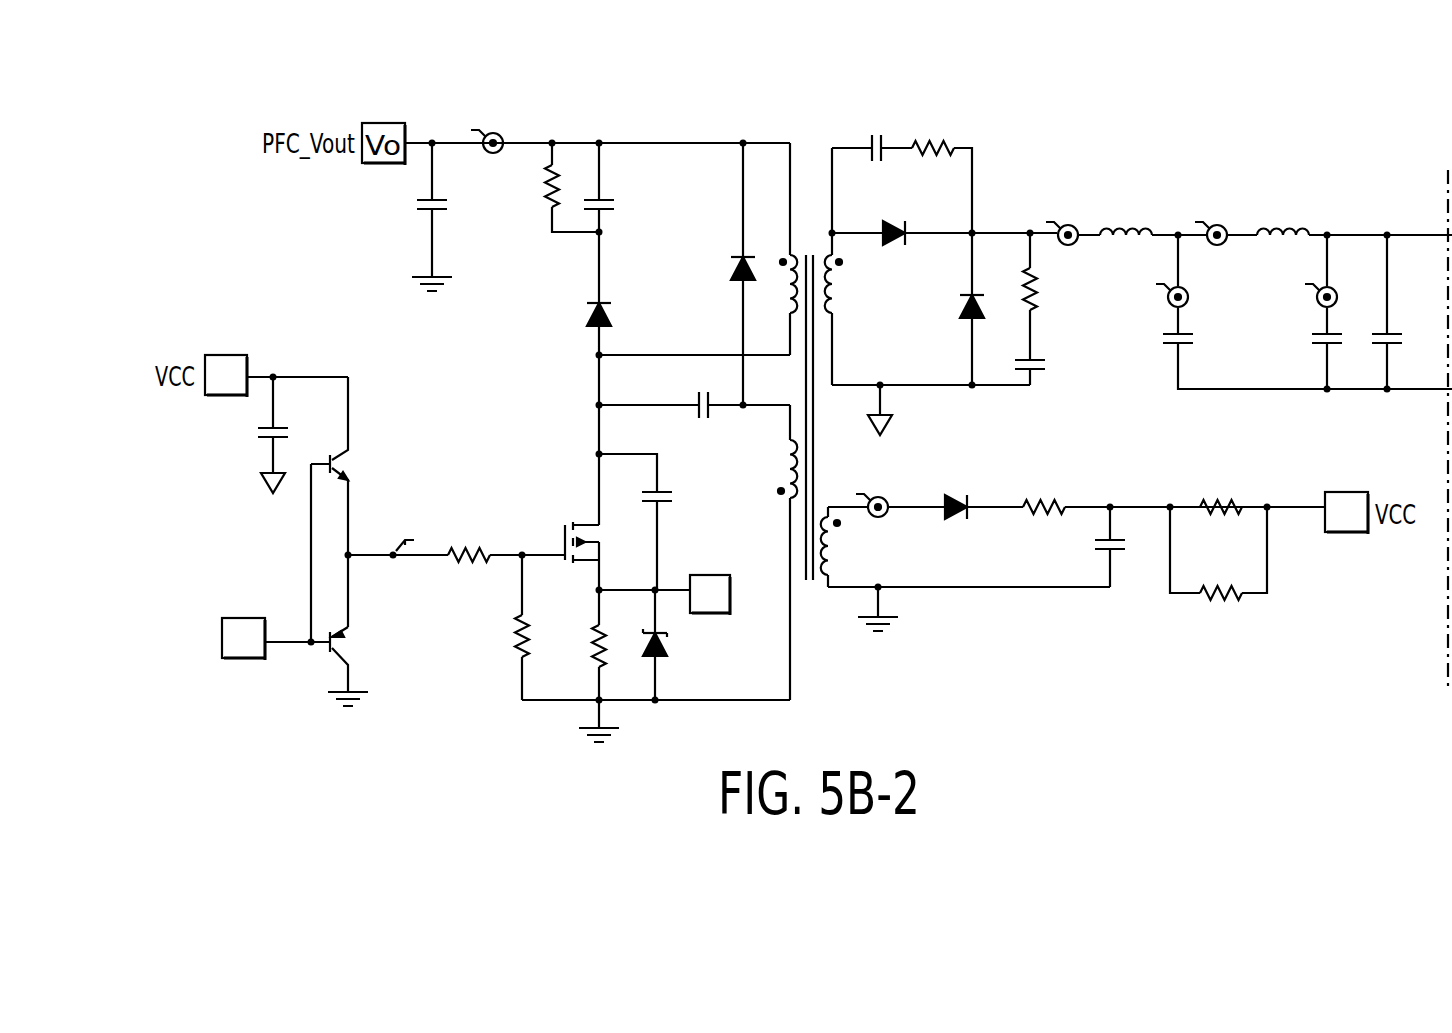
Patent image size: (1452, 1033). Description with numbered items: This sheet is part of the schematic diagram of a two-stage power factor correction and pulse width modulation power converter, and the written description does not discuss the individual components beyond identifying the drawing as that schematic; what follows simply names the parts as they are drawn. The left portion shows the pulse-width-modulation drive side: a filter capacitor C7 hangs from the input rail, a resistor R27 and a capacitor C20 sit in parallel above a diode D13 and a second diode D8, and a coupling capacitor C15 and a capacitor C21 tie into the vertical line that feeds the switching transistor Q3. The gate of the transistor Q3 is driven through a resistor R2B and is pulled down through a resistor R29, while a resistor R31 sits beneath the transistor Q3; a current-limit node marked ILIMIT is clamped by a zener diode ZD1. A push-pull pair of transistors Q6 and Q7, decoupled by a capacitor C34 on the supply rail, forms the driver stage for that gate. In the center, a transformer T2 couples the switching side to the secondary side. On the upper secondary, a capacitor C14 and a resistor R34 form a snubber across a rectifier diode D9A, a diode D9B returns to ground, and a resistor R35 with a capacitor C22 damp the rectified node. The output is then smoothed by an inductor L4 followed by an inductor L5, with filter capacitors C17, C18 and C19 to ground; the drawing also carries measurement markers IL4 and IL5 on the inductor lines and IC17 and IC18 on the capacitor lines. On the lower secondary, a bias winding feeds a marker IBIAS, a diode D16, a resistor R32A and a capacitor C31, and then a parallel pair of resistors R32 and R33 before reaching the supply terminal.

The capacitor 10n C7 is at (410, 217).
The resistor 100K R27 is at (543, 189).
The capacitor 1n C20 is at (625, 223).
The diode MUR1100 D13 is at (547, 408).
The diode MUR1100 D8 is at (692, 274).
The capacitor 10n C15 is at (705, 408).
The capacitor 470p C21 is at (665, 521).
The transformer T2 is at (810, 421).
The MOSFET Q3 is at (559, 556).
The resistor 22 R2B is at (457, 554).
The resistor 10K R29 is at (497, 627).
The resistor R31 is at (574, 645).
The current limit port ILIMIT is at (706, 579).
The zener diode 6.8V ZD1 is at (681, 645).
The capacitor 100n C34 is at (246, 435).
The transistor Q2N2222 Q6 is at (378, 466).
The transistor Q2N2904 Q7 is at (355, 660).
The capacitor 10n C14 is at (877, 150).
The resistor 4.7 R34 is at (929, 149).
The diode D9A is at (900, 252).
The diode D9B is at (942, 314).
The resistor 4.7 R35 is at (1056, 296).
The capacitor 10n C22 is at (1052, 367).
The inductor current probe IL4 is at (1069, 218).
The inductor L4 is at (1126, 249).
The inductor current probe IL5 is at (1219, 218).
The inductor L5 is at (1283, 249).
The capacitor current probe IC17 is at (1151, 298).
The capacitor C17 is at (1204, 336).
The capacitor current probe IC18 is at (1302, 298).
The capacitor C18 is at (1305, 336).
The capacitor C19 is at (1411, 323).
The bias current probe IBIAS is at (888, 491).
The diode 1N4148 D16 is at (962, 508).
The resistor R32A is at (1039, 527).
The capacitor C31 is at (1127, 547).
The resistor R32 is at (1221, 527).
The resistor R33 is at (1221, 612).